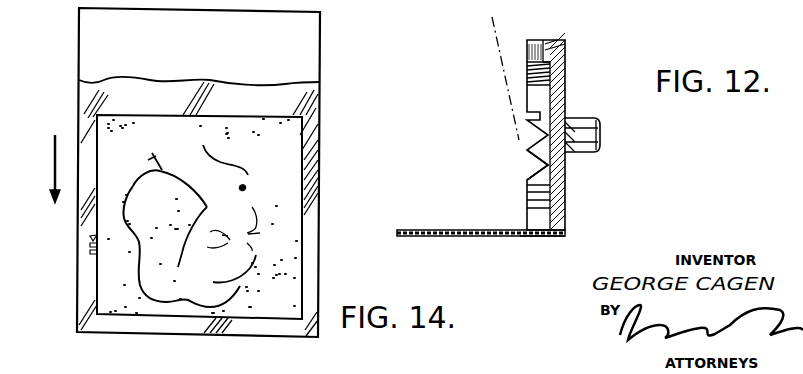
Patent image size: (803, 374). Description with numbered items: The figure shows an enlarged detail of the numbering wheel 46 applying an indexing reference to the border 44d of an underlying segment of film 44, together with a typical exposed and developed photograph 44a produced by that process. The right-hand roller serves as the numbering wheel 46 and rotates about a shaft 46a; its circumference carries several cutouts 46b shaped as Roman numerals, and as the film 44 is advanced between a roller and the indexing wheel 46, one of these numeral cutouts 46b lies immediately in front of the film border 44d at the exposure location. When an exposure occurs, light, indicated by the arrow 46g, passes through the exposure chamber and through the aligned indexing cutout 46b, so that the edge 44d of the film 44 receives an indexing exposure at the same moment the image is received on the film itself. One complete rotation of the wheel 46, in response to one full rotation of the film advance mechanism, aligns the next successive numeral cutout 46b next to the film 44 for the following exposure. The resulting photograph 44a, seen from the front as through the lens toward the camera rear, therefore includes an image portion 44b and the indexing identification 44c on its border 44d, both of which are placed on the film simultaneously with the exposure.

In FIG. 14, the film 44 is at (310, 50).
In FIG. 12, the film 44 is at (415, 230).
In FIG. 14, the photograph 44a is at (312, 72).
In FIG. 14, the image portion 44b is at (290, 160).
In FIG. 14, the indexing identification 44c is at (93, 238).
In FIG. 14, the film border 44d is at (312, 210).
In FIG. 12, the film border 44d is at (553, 237).
In FIG. 12, the numbering wheel 46 is at (563, 62).
In FIG. 12, the shaft 46a is at (598, 135).
In FIG. 12, the cutouts 46b is at (540, 228).
In FIG. 12, the light arrow 46g is at (495, 33).